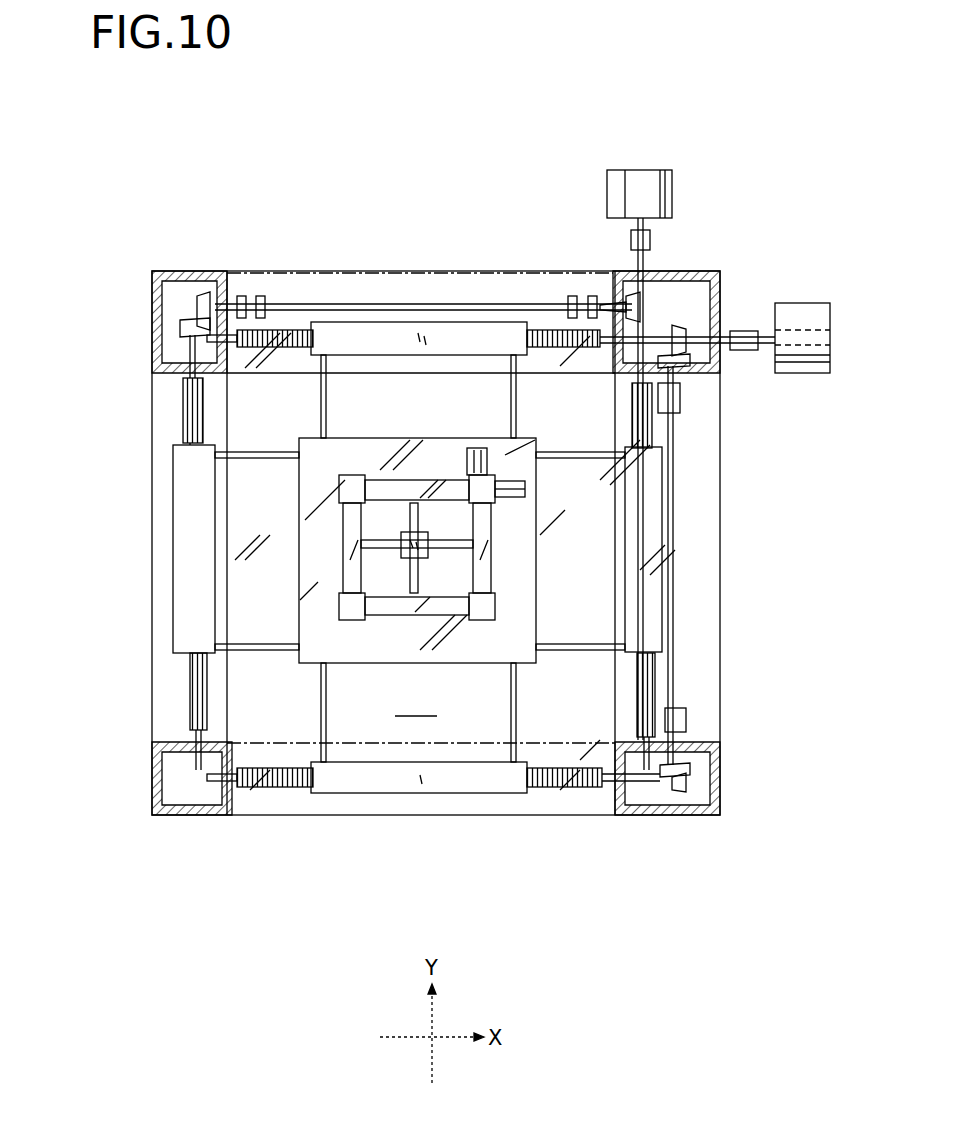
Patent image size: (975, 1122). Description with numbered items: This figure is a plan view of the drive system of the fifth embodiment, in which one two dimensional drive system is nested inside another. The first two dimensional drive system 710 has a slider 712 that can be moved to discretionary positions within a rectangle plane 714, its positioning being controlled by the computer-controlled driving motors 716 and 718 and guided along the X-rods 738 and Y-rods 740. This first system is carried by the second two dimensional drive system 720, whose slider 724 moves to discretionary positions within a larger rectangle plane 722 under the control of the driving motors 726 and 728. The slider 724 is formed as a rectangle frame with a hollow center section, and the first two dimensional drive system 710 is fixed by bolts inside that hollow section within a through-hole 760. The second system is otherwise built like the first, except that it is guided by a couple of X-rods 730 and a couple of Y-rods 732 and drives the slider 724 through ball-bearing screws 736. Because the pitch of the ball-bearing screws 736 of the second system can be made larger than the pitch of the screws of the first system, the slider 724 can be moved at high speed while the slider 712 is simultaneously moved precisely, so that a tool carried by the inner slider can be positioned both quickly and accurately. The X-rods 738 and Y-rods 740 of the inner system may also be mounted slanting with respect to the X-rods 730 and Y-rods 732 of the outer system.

The first two dimensional drive system 710 is at (470, 569).
The slider 712 is at (420, 530).
The rectangle plane 714 is at (385, 519).
The driving motor 716 is at (527, 490).
The driving motor 718 is at (463, 445).
The second two dimensional drive system 720 is at (150, 694).
The rectangle plane 722 is at (432, 558).
The slider 724 is at (318, 597).
The driving motor 726 is at (800, 318).
The driving motor 728 is at (671, 176).
The X-rods 730 is at (318, 698).
The Y-rods 732 is at (255, 445).
The ball-bearing screws 736 is at (286, 345).
The X-rods 738 is at (417, 583).
The Y-rods 740 is at (378, 558).
The through-hole 760 is at (605, 737).